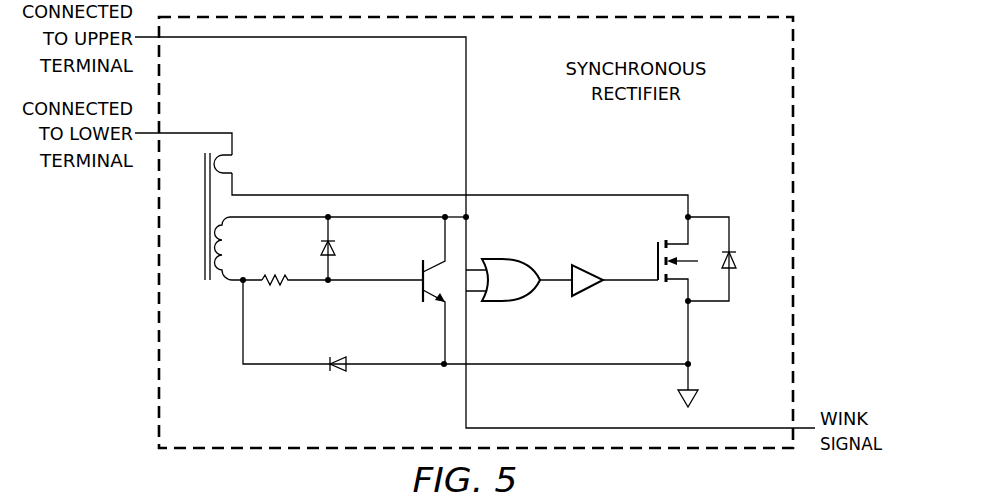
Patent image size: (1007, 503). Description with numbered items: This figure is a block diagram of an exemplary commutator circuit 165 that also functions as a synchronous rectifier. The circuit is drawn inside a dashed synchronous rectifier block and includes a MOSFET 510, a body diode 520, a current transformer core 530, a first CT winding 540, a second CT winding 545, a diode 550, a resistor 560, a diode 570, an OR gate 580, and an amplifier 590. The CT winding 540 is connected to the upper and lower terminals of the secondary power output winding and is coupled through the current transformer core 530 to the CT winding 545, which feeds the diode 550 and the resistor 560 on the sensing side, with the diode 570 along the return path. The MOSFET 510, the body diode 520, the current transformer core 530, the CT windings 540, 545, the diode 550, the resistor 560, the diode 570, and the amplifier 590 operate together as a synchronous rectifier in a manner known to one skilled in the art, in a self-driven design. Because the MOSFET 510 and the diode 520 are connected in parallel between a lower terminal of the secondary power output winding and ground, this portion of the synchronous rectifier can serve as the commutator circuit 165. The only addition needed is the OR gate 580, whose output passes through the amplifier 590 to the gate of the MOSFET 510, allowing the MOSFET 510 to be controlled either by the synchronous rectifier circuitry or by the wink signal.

The commutator circuit 165 is at (151, 226).
The MOSFET 510 is at (657, 255).
The body diode 520 is at (731, 252).
The current transformer core 530 is at (208, 283).
The CT winding 540 is at (233, 162).
The CT winding 545 is at (225, 257).
The diode 550 is at (338, 248).
The resistor 560 is at (282, 285).
The diode 570 is at (338, 372).
The OR gate 580 is at (522, 258).
The amplifier 590 is at (588, 285).